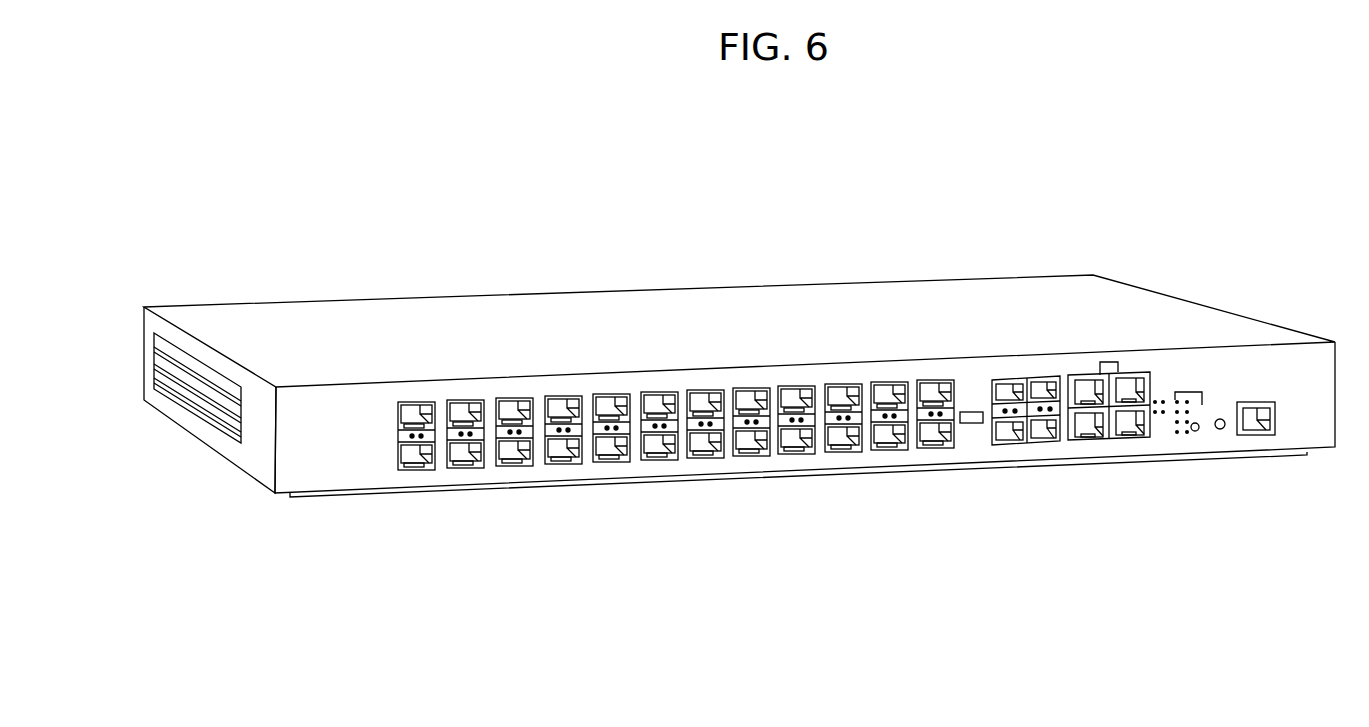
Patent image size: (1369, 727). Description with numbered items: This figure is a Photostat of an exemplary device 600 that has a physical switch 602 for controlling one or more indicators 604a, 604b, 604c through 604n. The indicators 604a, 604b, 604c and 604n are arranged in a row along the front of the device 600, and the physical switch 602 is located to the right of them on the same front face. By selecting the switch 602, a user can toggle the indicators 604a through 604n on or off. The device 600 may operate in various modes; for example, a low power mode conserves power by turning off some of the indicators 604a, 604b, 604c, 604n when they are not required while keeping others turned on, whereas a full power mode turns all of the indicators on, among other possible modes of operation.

The device 600 is at (175, 232).
The physical switch 602 is at (1220, 430).
The indicator 604a is at (397, 438).
The indicator 604b is at (460, 437).
The indicator 604c is at (912, 537).
The indicator 604n is at (940, 415).